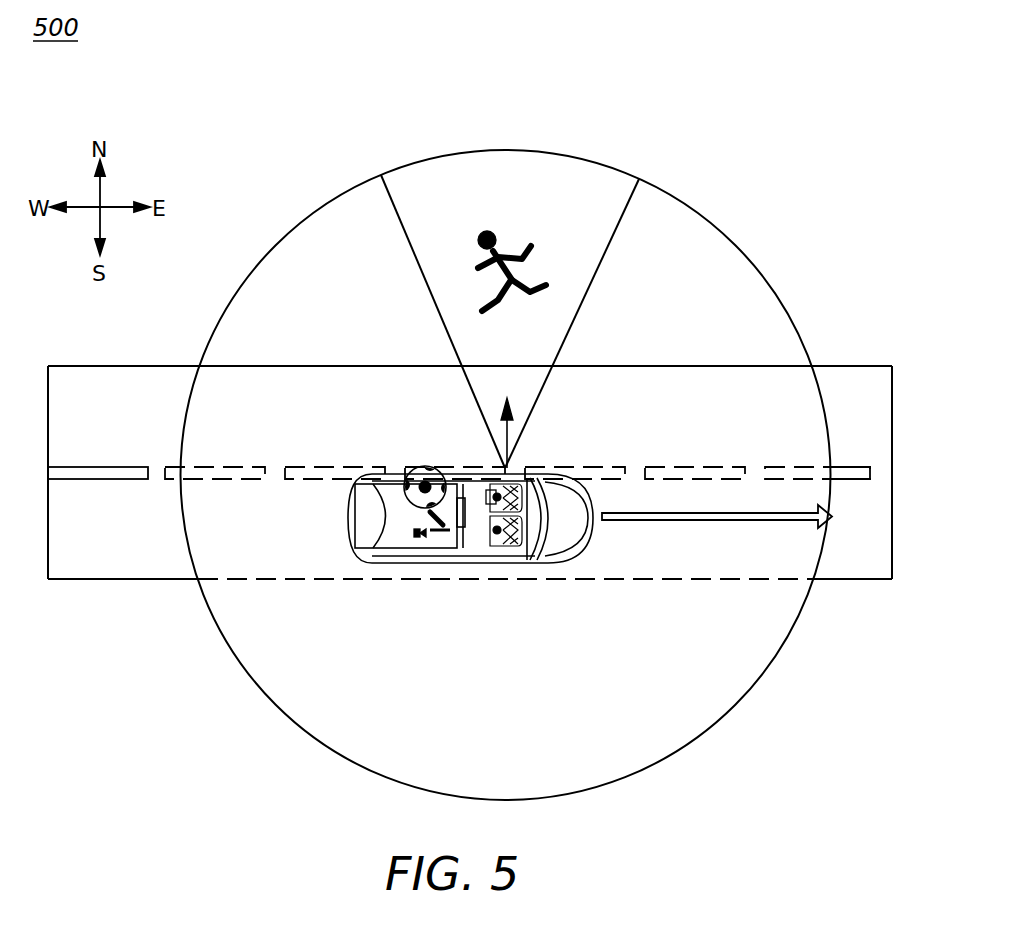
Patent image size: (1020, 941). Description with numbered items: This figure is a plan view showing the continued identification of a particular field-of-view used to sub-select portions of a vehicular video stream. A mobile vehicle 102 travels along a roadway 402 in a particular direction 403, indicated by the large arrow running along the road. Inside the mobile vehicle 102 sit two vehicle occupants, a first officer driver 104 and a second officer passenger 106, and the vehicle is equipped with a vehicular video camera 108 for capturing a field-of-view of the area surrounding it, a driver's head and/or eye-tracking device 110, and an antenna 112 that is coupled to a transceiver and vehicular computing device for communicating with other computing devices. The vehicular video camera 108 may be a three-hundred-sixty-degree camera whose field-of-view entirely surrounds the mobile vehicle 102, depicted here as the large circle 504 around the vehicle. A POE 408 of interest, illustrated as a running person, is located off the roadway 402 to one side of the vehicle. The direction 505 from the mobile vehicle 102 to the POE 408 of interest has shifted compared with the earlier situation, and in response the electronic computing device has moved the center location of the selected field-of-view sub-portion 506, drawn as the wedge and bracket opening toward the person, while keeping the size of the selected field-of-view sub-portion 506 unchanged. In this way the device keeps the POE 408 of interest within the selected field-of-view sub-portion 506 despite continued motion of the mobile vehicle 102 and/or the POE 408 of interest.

The mobile vehicle 102 is at (328, 497).
The first officer driver 104 is at (493, 496).
The second officer passenger 106 is at (497, 544).
The vehicular video camera 108 is at (406, 470).
The driver's head and/or eye-tracking device 110 is at (490, 504).
The antenna 112 is at (418, 535).
The roadway 402 is at (836, 365).
The direction 403 is at (698, 521).
The POE of interest 408 is at (495, 302).
The sensor range 504 is at (705, 213).
The direction 505 is at (510, 434).
The selected field-of-view sub-portion 506 is at (647, 143).